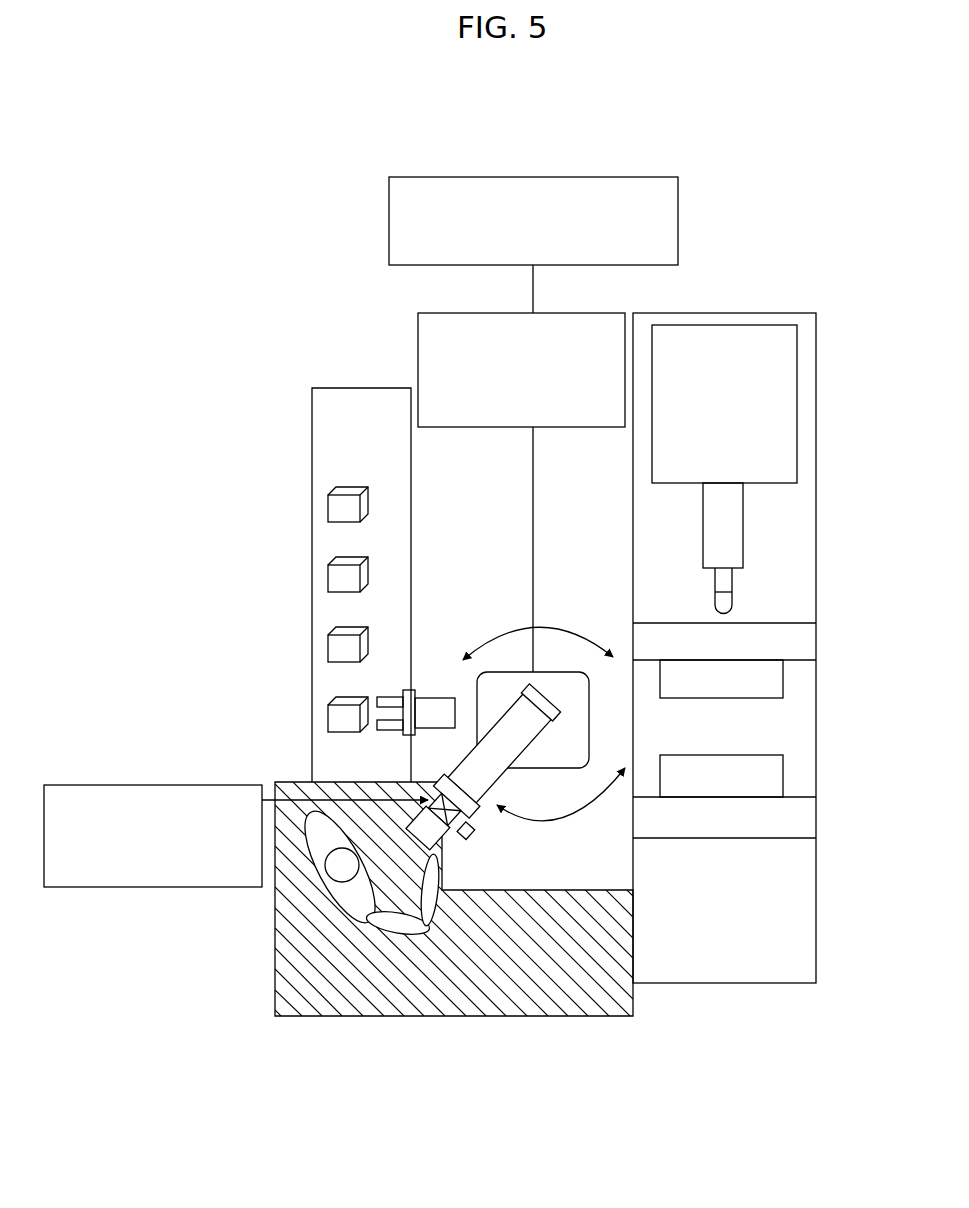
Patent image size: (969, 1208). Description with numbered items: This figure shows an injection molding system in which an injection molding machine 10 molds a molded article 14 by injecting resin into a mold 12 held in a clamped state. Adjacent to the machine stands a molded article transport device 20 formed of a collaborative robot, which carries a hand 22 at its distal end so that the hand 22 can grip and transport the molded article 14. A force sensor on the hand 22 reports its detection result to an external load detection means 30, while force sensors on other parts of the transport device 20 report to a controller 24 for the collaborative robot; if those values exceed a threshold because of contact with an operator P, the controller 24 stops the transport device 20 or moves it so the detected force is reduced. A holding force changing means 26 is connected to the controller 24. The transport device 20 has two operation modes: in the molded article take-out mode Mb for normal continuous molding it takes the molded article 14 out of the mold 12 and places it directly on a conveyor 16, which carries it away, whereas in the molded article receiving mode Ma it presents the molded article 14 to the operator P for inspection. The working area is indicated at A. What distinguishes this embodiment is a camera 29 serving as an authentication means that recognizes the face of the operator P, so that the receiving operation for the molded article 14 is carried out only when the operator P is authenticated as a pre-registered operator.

The injection molding machine 10 is at (787, 398).
The mold 12 is at (758, 772).
The molded article 14 is at (345, 645).
The conveyor 16 is at (345, 750).
The molded article transport device 20 is at (528, 768).
The hand 22 is at (453, 832).
The controller for the collaborative robot 24 is at (418, 338).
The holding force changing means 26 is at (678, 220).
The camera 29 is at (462, 822).
The external load detection means 30 is at (163, 887).
The operator P is at (332, 903).
The work area A is at (493, 1016).
The molded article receiving mode Ma is at (570, 824).
The molded article take-out mode Mb is at (560, 630).